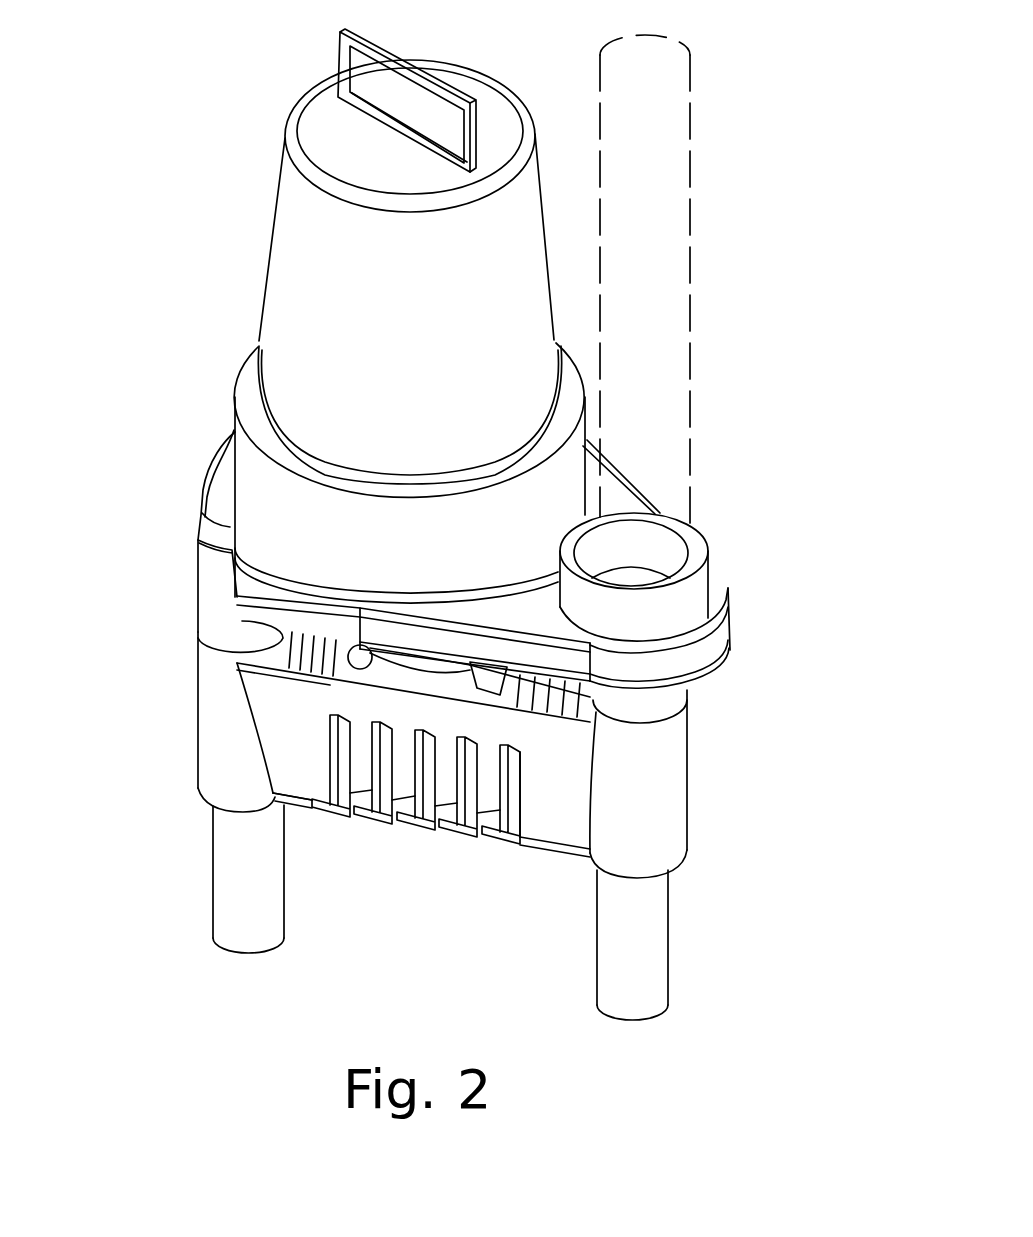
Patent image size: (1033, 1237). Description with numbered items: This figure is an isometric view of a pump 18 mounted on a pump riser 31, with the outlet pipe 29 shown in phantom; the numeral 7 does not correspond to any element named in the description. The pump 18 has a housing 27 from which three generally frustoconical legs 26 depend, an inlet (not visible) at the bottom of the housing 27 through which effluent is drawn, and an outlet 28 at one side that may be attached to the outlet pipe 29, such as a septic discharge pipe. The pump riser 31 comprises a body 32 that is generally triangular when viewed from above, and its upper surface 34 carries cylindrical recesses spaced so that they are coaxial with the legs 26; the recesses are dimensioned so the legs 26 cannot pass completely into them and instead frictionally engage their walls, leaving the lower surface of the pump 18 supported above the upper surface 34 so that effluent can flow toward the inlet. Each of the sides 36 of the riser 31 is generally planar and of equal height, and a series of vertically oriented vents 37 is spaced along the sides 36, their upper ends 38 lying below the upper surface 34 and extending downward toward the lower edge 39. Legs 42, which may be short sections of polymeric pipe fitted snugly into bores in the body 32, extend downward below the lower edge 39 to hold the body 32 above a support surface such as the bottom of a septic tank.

The section indicator 7 is at (645, 52).
The pump 18 is at (310, 273).
The legs 26 is at (225, 617).
The housing 27 is at (235, 427).
The outlet 28 is at (695, 598).
The outlet pipe 29 is at (728, 277).
The pump riser 31 is at (433, 820).
The body 32 is at (220, 728).
The upper surface 34 is at (592, 708).
The sides 36 is at (414, 767).
The vents 37 is at (338, 737).
The upper ends 38 is at (337, 720).
The lower edge 39 is at (323, 810).
The legs 42 is at (267, 928).